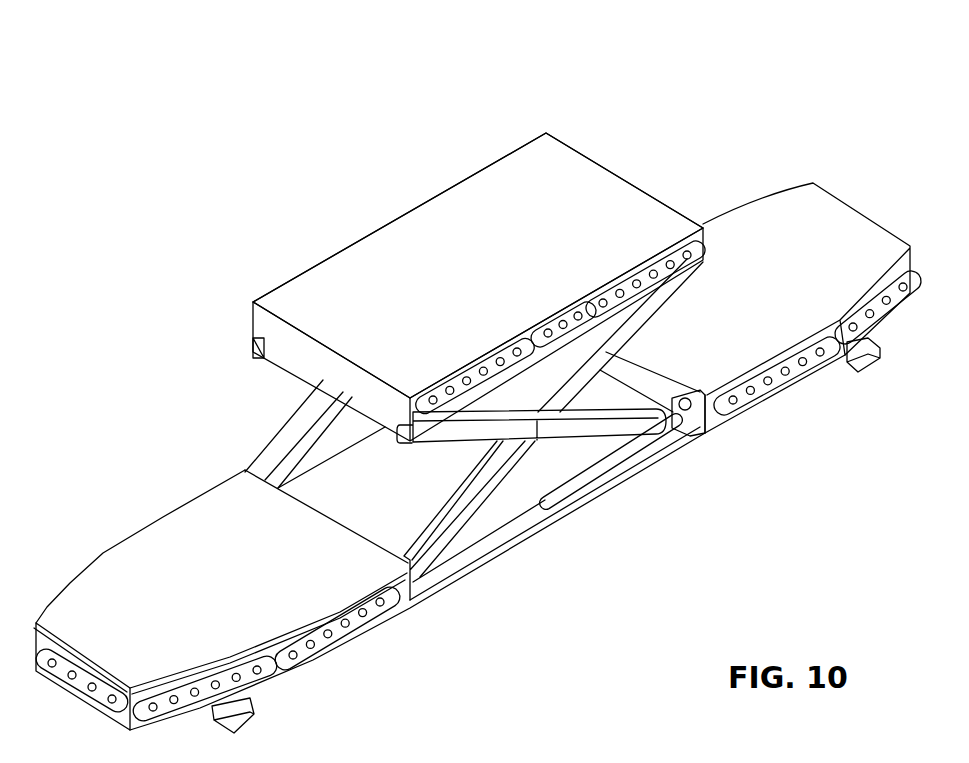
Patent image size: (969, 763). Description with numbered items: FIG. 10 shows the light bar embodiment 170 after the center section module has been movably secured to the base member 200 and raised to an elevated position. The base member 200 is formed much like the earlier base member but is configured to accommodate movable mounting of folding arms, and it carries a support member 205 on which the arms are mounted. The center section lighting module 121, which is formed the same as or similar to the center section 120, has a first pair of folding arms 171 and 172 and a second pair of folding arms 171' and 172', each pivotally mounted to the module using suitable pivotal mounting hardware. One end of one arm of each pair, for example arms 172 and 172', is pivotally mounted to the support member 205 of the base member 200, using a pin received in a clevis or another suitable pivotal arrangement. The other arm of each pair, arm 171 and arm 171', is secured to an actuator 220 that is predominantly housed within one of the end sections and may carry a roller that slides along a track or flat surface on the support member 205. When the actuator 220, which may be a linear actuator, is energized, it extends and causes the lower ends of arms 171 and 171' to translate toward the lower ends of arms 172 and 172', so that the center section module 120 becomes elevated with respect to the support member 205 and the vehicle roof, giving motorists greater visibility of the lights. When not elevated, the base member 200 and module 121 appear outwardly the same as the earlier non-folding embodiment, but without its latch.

The lift assembly 170 is at (234, 136).
The center section module 120 is at (530, 180).
The center section lighting module 121 is at (254, 275).
The folding arm 172' is at (195, 333).
The folding arm 171' is at (242, 434).
The support member 205 is at (473, 535).
The folding arm 171 is at (553, 432).
The folding arm 172 is at (631, 446).
The actuator 220 is at (697, 424).
The base member 200 is at (792, 409).